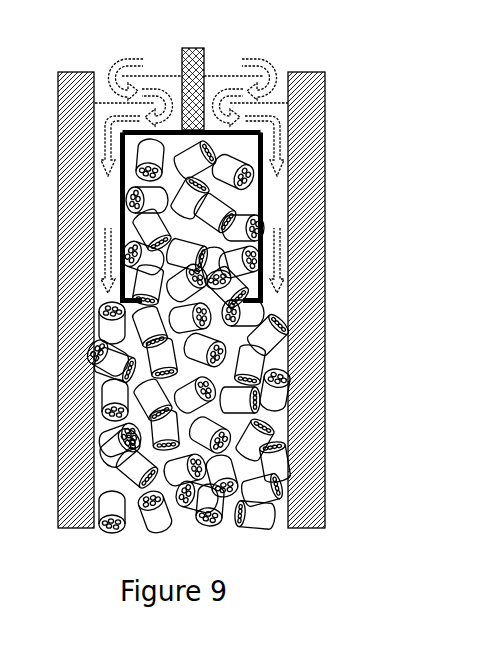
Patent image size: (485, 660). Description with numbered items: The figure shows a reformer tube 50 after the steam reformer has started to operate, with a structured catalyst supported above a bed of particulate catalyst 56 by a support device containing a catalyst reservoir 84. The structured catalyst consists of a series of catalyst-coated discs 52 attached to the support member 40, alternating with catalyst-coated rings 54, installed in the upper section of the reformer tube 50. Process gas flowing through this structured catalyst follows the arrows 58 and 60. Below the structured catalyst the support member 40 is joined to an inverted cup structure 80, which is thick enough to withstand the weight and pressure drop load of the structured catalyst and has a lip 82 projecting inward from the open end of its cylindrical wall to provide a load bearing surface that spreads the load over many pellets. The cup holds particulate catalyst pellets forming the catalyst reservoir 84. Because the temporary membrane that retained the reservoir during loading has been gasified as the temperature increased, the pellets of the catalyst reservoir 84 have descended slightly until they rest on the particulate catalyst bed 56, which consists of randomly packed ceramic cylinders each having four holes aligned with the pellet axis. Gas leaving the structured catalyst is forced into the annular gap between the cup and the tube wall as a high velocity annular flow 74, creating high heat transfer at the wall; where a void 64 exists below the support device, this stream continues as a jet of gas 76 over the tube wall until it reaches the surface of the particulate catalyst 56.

The support member 40 is at (204, 58).
The reformer tube 50 is at (325, 150).
The catalyst-coated disc 52 is at (138, 66).
The catalyst-coated ring 54 is at (94, 72).
The particulate catalyst 56 is at (102, 442).
The process gas flow arrow 58 is at (280, 75).
The process gas flow arrow 60 is at (262, 104).
The void 64 is at (100, 355).
The high velocity annular flow 74 is at (100, 240).
The jet of gas 76 is at (100, 340).
The inverted cup structure 80 is at (118, 255).
The lip 82 is at (263, 268).
The catalyst reservoir 84 is at (118, 192).